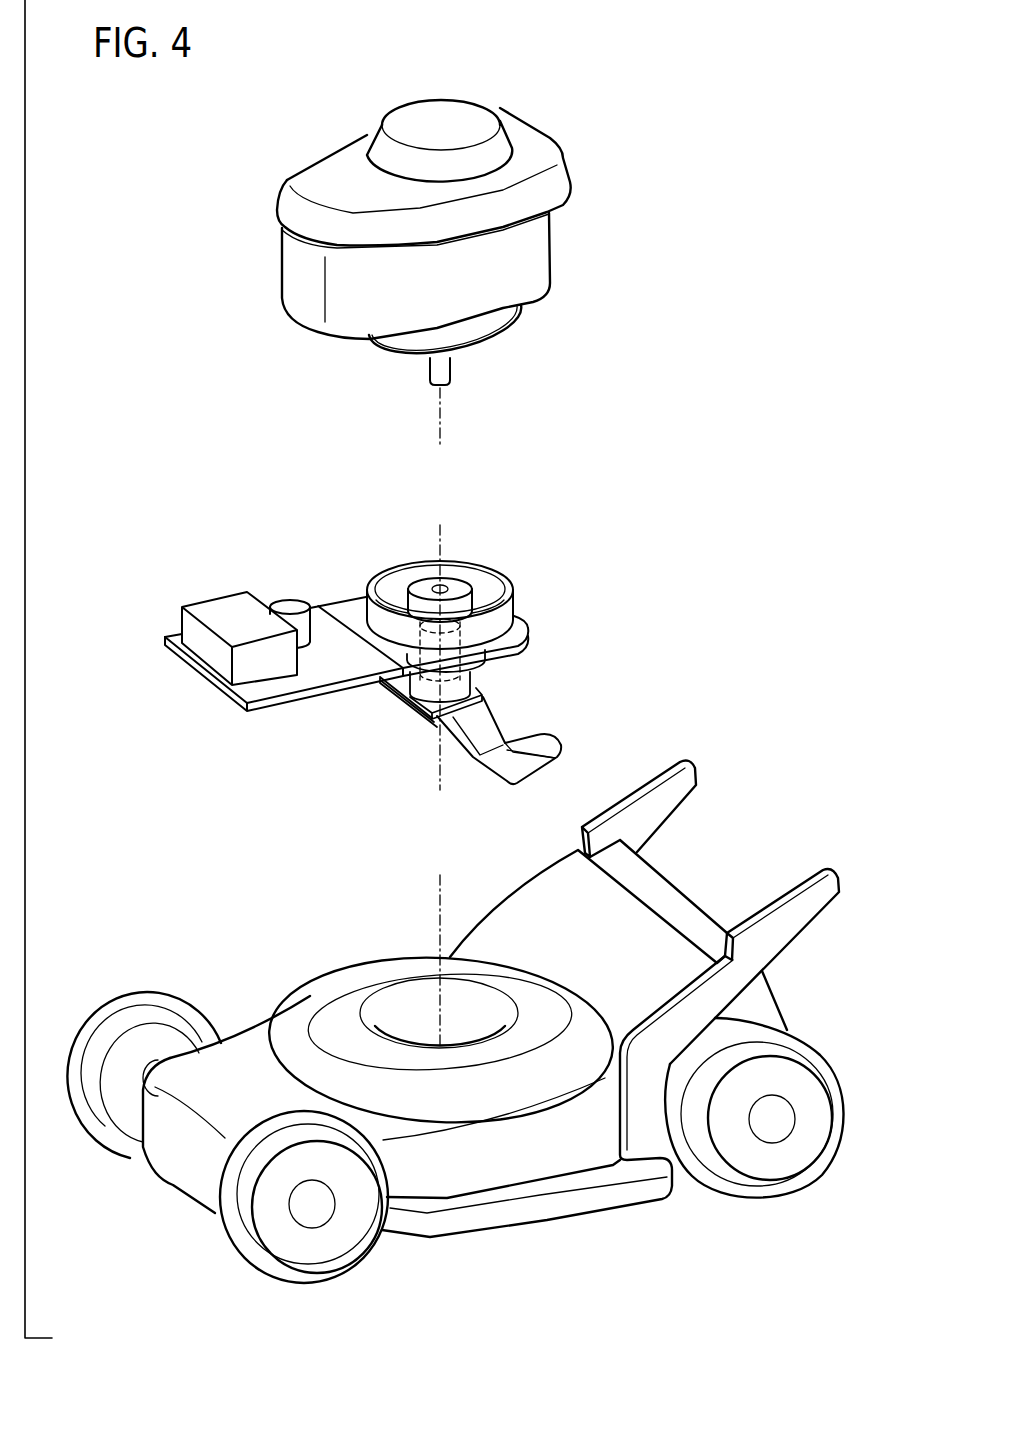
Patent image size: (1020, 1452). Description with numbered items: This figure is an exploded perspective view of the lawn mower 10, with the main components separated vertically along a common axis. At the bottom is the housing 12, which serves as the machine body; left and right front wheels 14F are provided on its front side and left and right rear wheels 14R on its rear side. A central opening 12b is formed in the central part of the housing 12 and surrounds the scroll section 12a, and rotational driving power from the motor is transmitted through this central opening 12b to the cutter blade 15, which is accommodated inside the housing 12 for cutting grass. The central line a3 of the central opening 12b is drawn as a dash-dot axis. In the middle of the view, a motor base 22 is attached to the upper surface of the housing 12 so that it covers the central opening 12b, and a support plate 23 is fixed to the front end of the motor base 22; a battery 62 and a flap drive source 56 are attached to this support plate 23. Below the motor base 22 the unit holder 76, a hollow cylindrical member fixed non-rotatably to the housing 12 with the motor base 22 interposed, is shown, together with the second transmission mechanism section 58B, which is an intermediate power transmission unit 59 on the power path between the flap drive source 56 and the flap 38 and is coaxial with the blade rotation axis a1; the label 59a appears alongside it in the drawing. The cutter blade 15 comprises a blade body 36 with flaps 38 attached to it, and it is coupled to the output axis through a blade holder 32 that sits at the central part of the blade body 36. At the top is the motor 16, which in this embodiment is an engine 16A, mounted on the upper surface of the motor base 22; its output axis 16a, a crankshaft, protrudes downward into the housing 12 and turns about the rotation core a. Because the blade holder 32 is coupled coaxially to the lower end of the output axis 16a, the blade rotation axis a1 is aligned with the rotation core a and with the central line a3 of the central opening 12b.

The lawn mower 10 is at (710, 108).
The housing 12 is at (491, 998).
The scroll section 12a is at (302, 1035).
The central opening 12b is at (403, 1003).
The front wheels 14F is at (138, 1002).
The rear wheels 14R is at (781, 1157).
The cutter blade 15 is at (529, 751).
The motor 16 is at (424, 259).
The engine 16A is at (424, 283).
The output axis 16a is at (452, 366).
The motor base 22 is at (494, 561).
The support plate 23 is at (335, 627).
The blade holder 32 is at (415, 708).
The blade body 36 is at (503, 760).
The flaps 38 is at (548, 747).
The flap drive source 56 is at (290, 600).
The second transmission mechanism section 58B is at (553, 650).
The intermediate power transmission unit 59 is at (440, 650).
The shaft end 59a is at (462, 636).
The battery 62 is at (217, 607).
The unit holder 76 is at (486, 663).
The rotation core a is at (440, 427).
The blade rotation axis a1 is at (441, 670).
The central line a3 is at (440, 949).